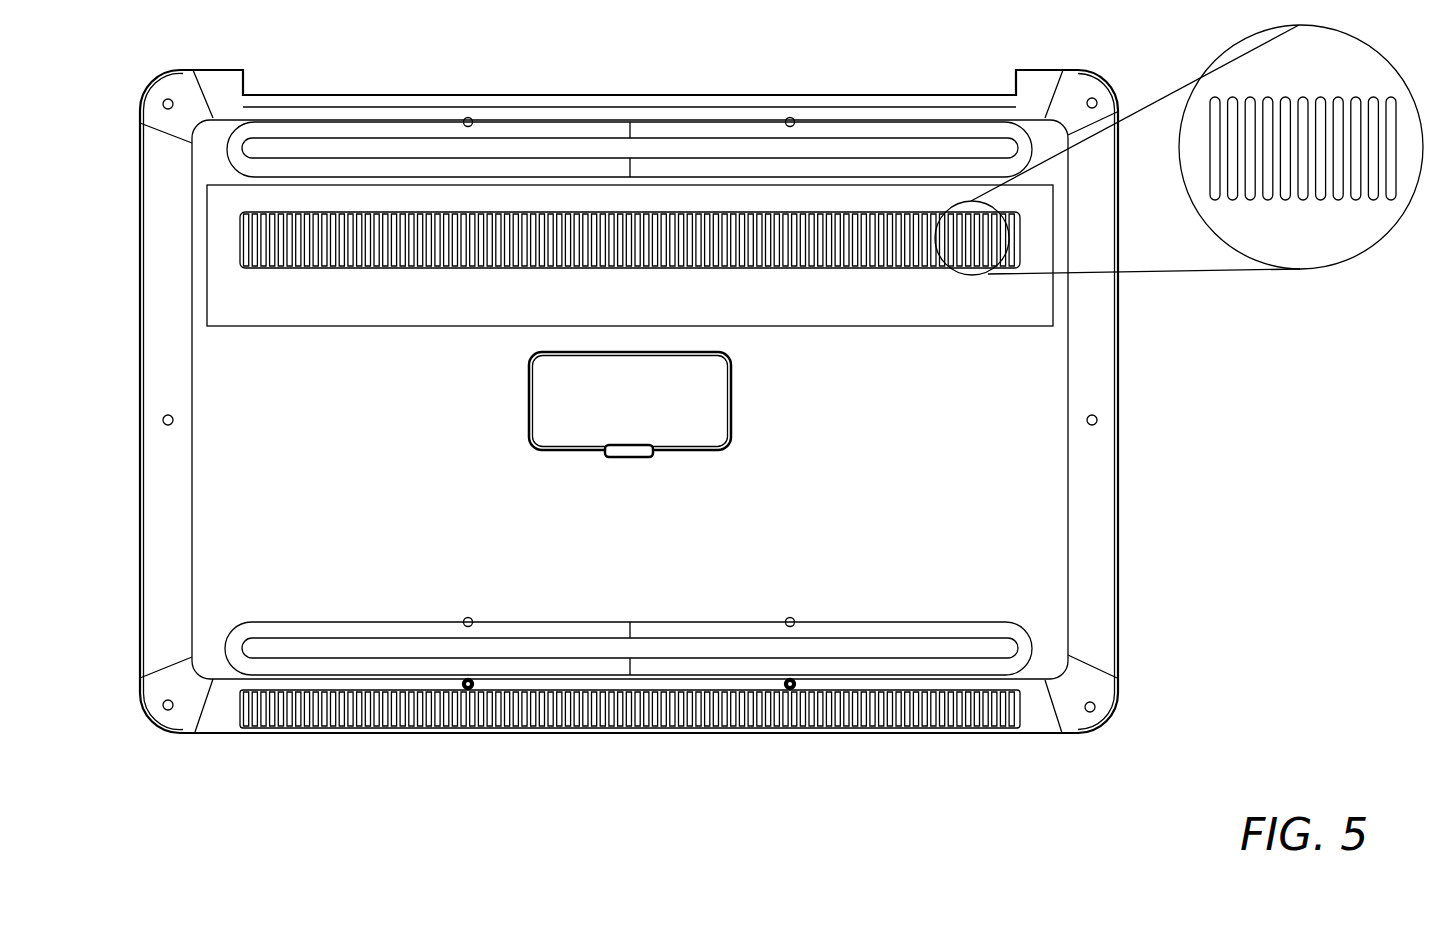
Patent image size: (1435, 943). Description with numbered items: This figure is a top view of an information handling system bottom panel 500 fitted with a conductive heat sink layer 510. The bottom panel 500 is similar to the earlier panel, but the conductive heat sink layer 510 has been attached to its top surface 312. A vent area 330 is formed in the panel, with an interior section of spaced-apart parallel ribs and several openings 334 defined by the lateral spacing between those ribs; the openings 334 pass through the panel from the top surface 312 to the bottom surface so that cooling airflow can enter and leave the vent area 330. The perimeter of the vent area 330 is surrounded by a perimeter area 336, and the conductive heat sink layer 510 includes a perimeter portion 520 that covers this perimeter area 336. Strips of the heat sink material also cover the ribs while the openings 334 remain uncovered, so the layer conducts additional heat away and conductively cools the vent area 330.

The bottom panel 500 is at (1117, 503).
The top surface 312 is at (1035, 575).
The conductive heat sink layer 510 is at (470, 328).
The vent area 330 is at (391, 267).
The openings 334 is at (1287, 197).
The perimeter portion 520 is at (1330, 177).
The perimeter area 336 is at (895, 343).